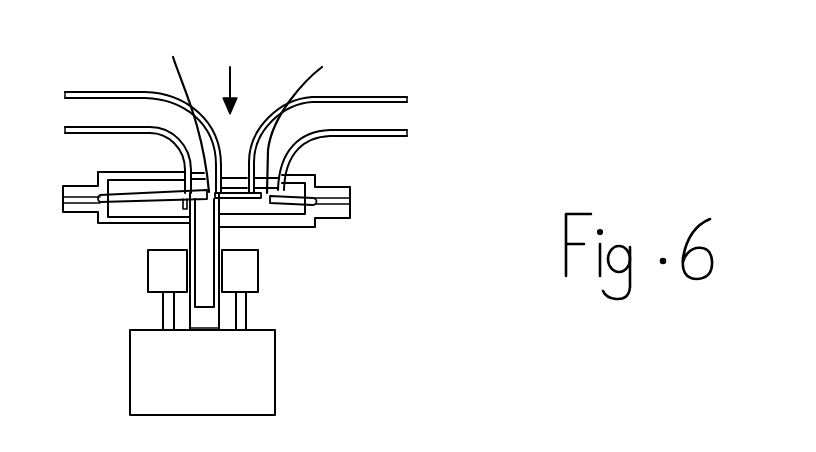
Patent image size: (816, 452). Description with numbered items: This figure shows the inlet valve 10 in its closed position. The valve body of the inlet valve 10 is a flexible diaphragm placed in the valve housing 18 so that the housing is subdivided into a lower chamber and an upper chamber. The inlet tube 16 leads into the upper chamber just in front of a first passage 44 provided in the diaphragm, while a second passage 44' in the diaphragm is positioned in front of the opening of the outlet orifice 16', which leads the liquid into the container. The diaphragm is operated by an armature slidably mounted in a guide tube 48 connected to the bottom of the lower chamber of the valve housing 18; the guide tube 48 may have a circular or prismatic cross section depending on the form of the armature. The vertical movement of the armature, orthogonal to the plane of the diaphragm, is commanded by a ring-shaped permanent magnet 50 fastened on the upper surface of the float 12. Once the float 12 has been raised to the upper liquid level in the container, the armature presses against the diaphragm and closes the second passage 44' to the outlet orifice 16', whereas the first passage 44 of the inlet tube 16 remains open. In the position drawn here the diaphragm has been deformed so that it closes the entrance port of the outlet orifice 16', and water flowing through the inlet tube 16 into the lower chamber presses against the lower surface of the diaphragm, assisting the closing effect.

The inlet valve 10 is at (233, 70).
The float 12 is at (145, 377).
The inlet tube 16 is at (345, 109).
The outlet orifice 16' is at (143, 109).
The valve housing 18 is at (276, 228).
The first passage 44 is at (307, 109).
The second passage 44' is at (178, 108).
The guide tube 48 is at (188, 230).
The permanent magnet 50 is at (242, 278).